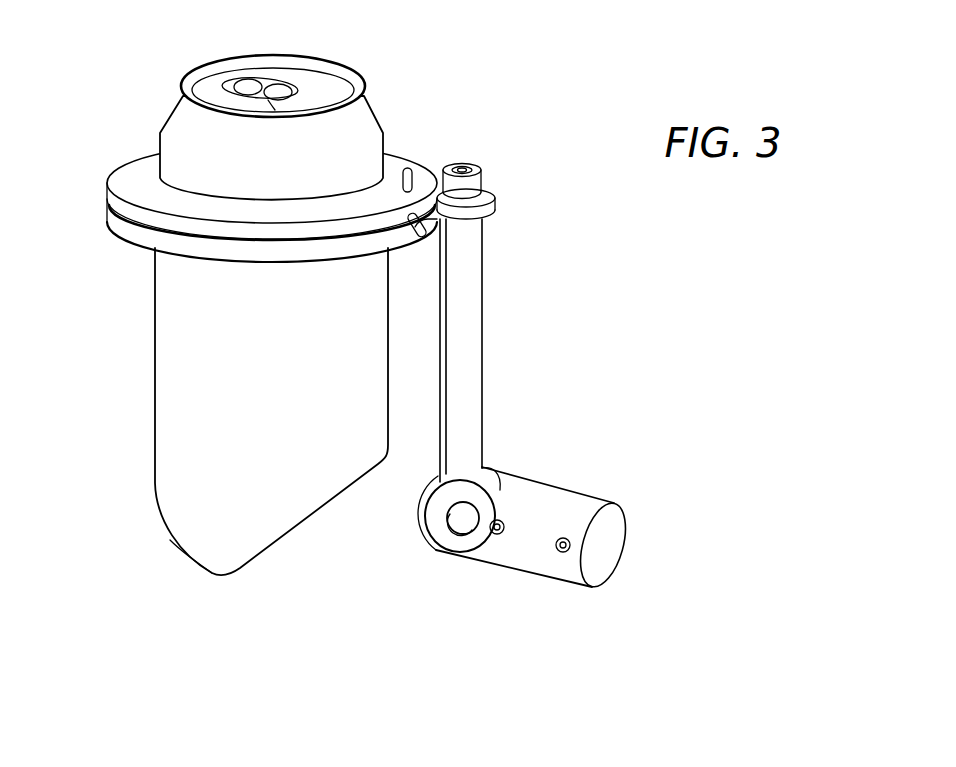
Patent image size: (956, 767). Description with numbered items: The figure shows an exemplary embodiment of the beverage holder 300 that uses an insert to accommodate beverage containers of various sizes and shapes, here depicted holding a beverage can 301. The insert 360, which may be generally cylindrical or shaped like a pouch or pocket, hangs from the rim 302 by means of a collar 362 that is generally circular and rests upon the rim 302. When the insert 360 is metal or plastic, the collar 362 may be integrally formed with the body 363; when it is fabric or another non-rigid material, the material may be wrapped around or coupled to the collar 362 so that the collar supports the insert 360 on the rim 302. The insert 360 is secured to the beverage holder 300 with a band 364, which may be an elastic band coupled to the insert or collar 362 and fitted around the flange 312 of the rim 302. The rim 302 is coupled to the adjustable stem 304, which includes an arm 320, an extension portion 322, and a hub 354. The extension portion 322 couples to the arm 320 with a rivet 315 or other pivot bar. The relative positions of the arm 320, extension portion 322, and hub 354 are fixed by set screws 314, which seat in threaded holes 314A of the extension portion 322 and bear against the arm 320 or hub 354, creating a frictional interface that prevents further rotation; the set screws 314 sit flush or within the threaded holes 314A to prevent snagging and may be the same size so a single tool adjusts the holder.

The beverage holder 300 is at (681, 281).
The beverage can 301 is at (202, 65).
The rim 302 is at (130, 235).
The adjustable stem 304 is at (537, 409).
The flange 312 is at (495, 203).
The set screws 314 is at (494, 535).
The threaded holes 314A is at (488, 535).
The rivet 315 is at (458, 523).
The arm 320 is at (482, 318).
The extension portion 322 is at (545, 495).
The hub 354 is at (605, 505).
The insert 360 is at (154, 373).
The collar 362 is at (138, 168).
The body 363 is at (182, 528).
The band 364 is at (408, 166).